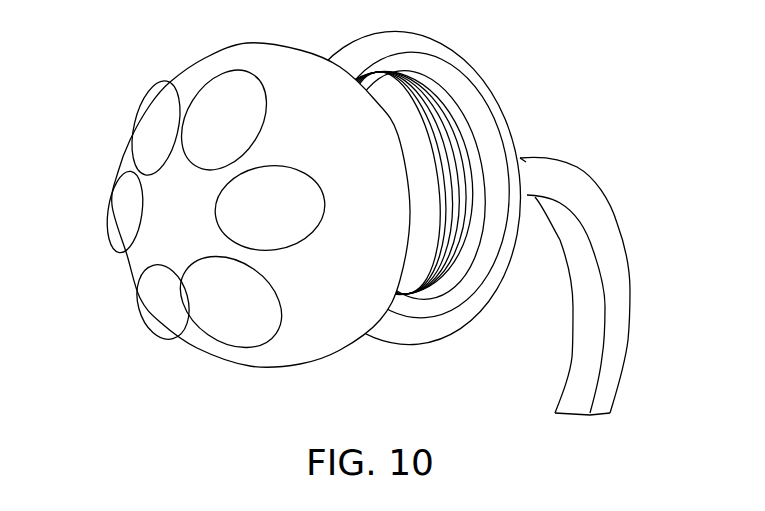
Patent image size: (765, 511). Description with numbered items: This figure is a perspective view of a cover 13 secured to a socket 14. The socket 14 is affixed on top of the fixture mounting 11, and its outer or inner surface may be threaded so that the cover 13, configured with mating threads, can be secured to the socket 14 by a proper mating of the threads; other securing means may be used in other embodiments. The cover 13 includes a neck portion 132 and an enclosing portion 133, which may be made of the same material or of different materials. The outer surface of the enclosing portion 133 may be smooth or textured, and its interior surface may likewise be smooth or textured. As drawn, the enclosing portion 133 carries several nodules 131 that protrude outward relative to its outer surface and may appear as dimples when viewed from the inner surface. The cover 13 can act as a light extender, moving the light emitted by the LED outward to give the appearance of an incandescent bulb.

The fixture mounting 11 is at (470, 70).
The cover 13 is at (158, 302).
The socket 14 is at (460, 243).
The nodules 131 is at (122, 198).
The neck portion 132 is at (407, 277).
The enclosing portion 133 is at (218, 65).